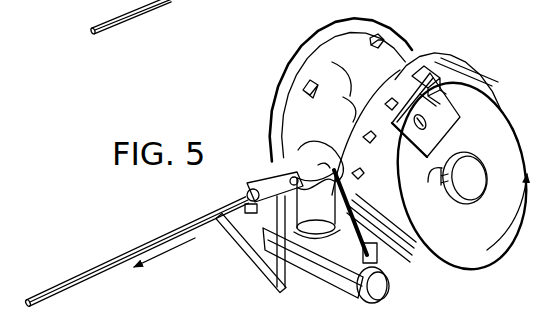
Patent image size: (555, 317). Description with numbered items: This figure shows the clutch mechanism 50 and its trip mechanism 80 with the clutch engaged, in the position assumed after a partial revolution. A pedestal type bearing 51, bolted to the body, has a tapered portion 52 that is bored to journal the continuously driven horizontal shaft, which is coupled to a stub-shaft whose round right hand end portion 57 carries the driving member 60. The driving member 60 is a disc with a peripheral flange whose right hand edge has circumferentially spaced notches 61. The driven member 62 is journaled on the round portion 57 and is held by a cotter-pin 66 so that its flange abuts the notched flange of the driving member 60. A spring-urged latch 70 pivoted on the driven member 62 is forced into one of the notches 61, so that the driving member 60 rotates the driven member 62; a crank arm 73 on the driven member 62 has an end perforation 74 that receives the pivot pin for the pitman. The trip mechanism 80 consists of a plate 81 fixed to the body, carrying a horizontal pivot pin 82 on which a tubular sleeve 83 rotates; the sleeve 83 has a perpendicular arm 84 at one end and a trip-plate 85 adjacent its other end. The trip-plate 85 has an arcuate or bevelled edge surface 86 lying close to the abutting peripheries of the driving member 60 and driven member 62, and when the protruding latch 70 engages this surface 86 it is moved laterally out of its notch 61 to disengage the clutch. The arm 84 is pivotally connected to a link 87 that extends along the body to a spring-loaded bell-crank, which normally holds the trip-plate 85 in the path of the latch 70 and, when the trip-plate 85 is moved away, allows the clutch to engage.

The clutch mechanism 50 is at (254, 112).
The pedestal type bearing 51 is at (318, 52).
The tapered portion 52 is at (353, 87).
The right hand end portion 57 is at (483, 165).
The driving member 60 is at (474, 57).
The notches 61 is at (364, 136).
The driven member 62 is at (452, 240).
The cotter-pin 66 is at (438, 172).
The latch 70 is at (406, 78).
The crank arm 73 is at (437, 150).
The end perforation 74 is at (445, 113).
The trip mechanism 80 is at (255, 276).
The plate 81 is at (250, 238).
The pivot pin 82 is at (387, 293).
The tubular sleeve 83 is at (337, 275).
The arm 84 is at (306, 204).
The trip-plate 85 is at (387, 260).
The arcuate or bevelled edge surface 86 is at (340, 160).
The link 87 is at (198, 0).